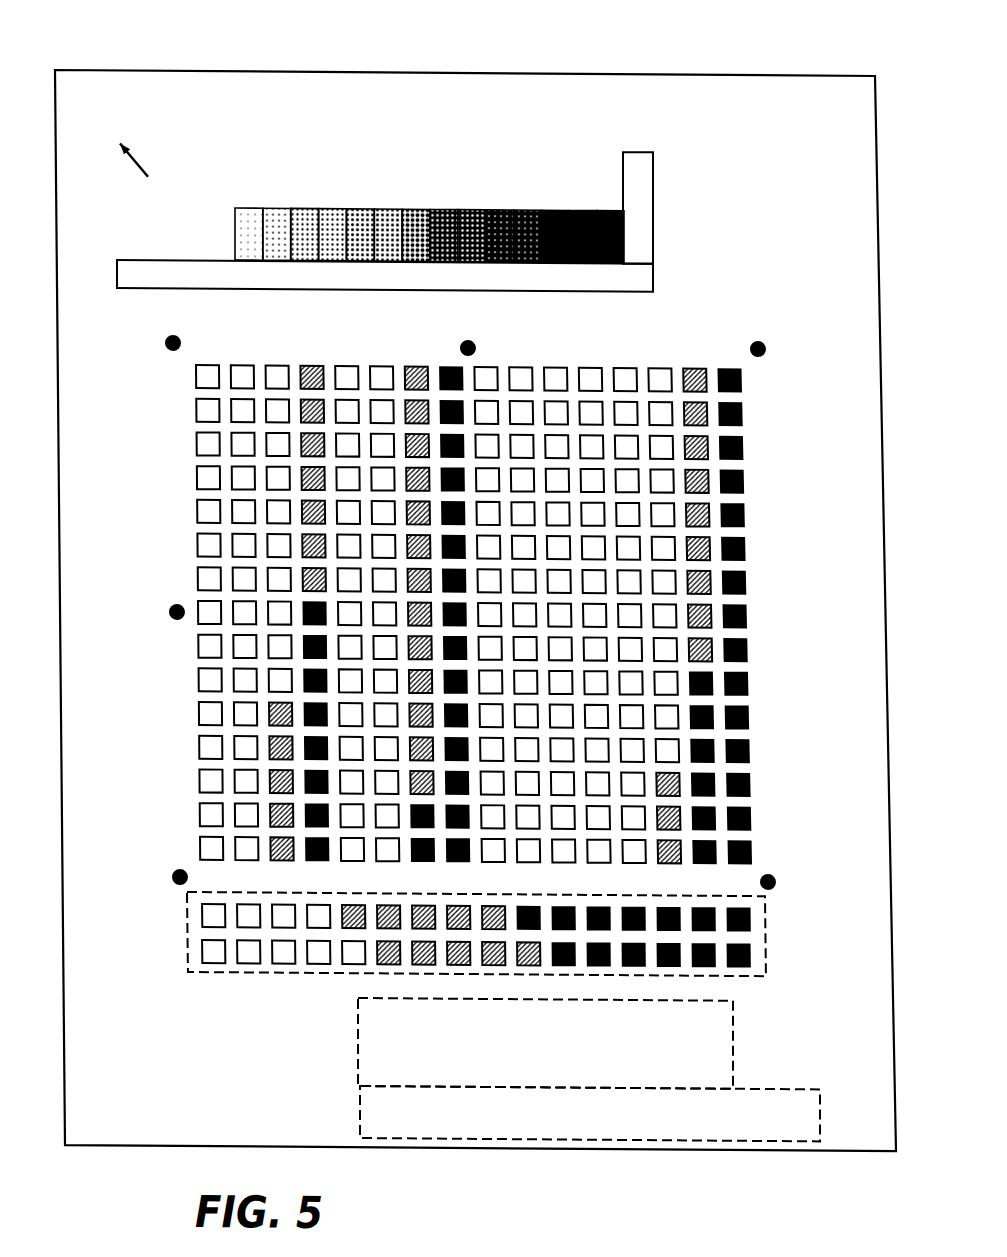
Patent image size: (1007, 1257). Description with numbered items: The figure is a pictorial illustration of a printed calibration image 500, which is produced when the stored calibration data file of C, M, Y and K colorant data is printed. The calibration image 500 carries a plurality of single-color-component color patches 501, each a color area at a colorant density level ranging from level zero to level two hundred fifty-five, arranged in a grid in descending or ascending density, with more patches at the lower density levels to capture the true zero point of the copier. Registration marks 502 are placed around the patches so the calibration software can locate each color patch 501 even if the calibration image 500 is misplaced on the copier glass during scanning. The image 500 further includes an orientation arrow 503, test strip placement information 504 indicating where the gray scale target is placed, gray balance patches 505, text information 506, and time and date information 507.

The calibration image 500 is at (723, 58).
The single-color-component color patches 501 is at (160, 449).
The registration marks 502 is at (180, 336).
The orientation arrow 503 is at (137, 162).
The test strip placement information 504 is at (480, 150).
The gray balance patches 505 is at (765, 942).
The text information 506 is at (358, 1041).
The time and date information 507 is at (360, 1109).